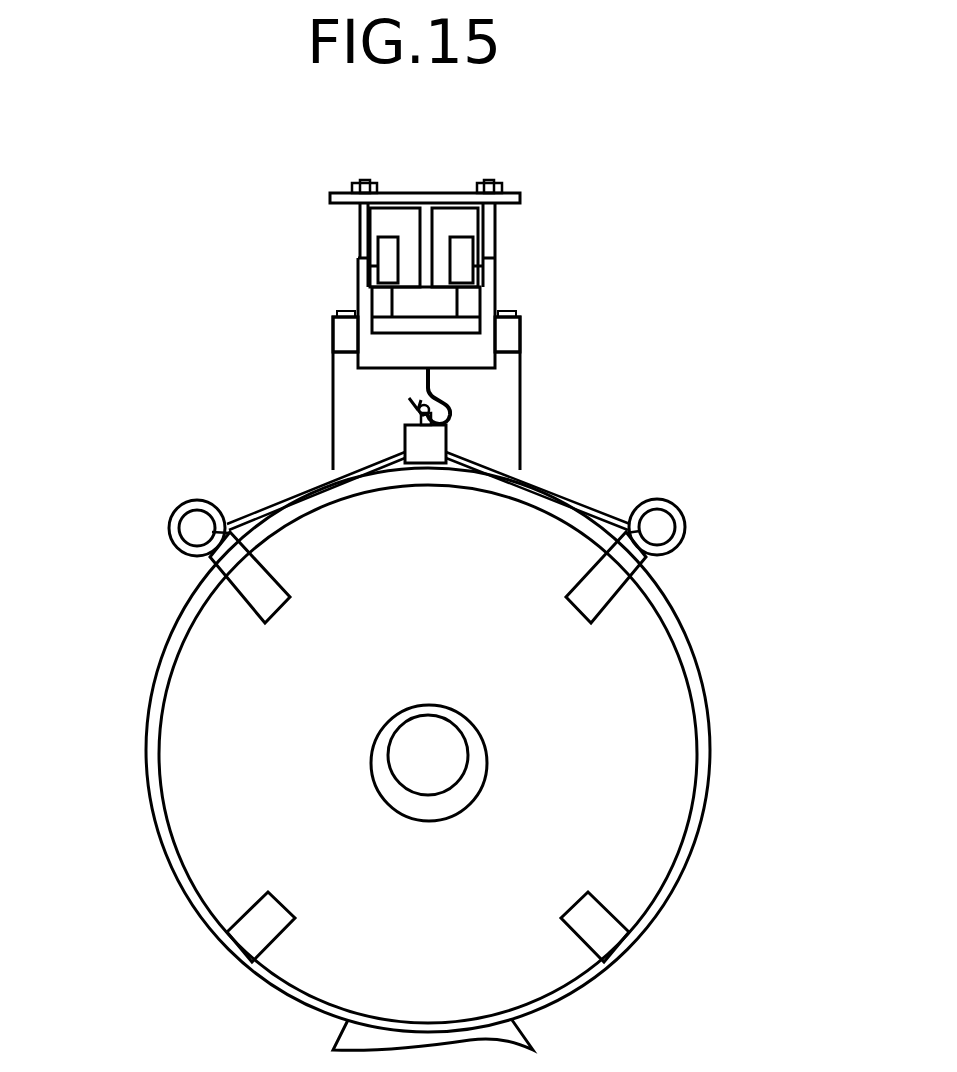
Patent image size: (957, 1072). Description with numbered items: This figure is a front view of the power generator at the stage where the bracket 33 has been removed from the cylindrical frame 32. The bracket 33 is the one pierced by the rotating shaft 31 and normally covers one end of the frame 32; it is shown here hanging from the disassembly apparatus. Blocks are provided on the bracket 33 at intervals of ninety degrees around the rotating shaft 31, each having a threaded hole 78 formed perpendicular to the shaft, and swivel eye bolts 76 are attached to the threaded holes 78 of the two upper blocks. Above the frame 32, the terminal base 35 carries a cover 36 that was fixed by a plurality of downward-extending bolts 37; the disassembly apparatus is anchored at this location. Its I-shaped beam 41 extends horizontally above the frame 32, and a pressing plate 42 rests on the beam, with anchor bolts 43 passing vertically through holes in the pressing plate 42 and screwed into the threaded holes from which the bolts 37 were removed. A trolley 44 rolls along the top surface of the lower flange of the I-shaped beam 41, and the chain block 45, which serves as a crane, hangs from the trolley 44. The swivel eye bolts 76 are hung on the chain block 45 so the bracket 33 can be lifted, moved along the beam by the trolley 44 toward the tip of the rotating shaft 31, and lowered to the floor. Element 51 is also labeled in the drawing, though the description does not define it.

The rotating shaft 31 is at (402, 758).
The frame 32 is at (712, 775).
The bracket 33 is at (650, 800).
The terminal base 35 is at (520, 378).
The cover 36 is at (520, 340).
The bolts 37 is at (343, 311).
The I-shaped beam 41 is at (396, 225).
The pressing plate 42 is at (520, 198).
The anchor bolts 43 is at (360, 183).
The trolley 44 is at (338, 342).
The chain block 45 is at (447, 440).
The base box 51 is at (430, 296).
The swivel eye bolts 76 is at (683, 520).
The threaded hole 78 is at (265, 580).